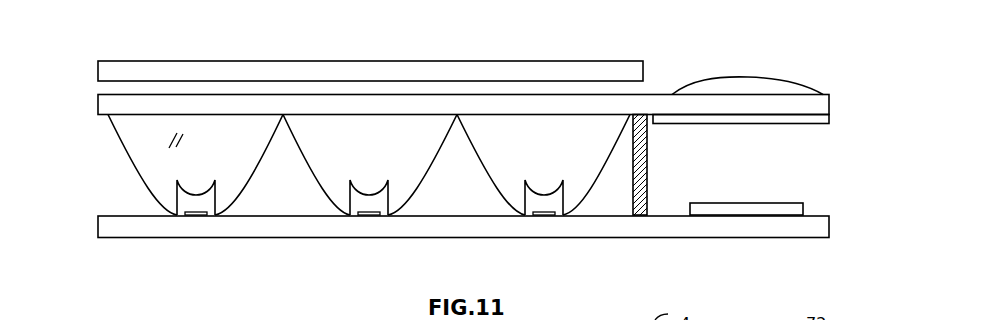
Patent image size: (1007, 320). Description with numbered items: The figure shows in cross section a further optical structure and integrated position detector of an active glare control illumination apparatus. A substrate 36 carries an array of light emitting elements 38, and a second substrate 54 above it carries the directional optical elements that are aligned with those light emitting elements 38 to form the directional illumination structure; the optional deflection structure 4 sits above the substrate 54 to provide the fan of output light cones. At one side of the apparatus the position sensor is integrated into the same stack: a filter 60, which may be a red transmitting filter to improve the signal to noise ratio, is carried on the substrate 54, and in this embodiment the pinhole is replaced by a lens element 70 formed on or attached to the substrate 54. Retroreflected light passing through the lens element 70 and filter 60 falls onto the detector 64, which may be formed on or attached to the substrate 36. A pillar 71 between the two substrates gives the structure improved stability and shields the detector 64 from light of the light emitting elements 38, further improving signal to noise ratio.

The deflection structure 4 is at (98, 72).
The substrate 54 is at (98, 103).
The substrate 36 is at (98, 227).
The light emitting elements 38 is at (187, 216).
The filter 60 is at (829, 115).
The detector 64 is at (803, 208).
The lens element 70 is at (752, 77).
The pillar 71 is at (647, 163).